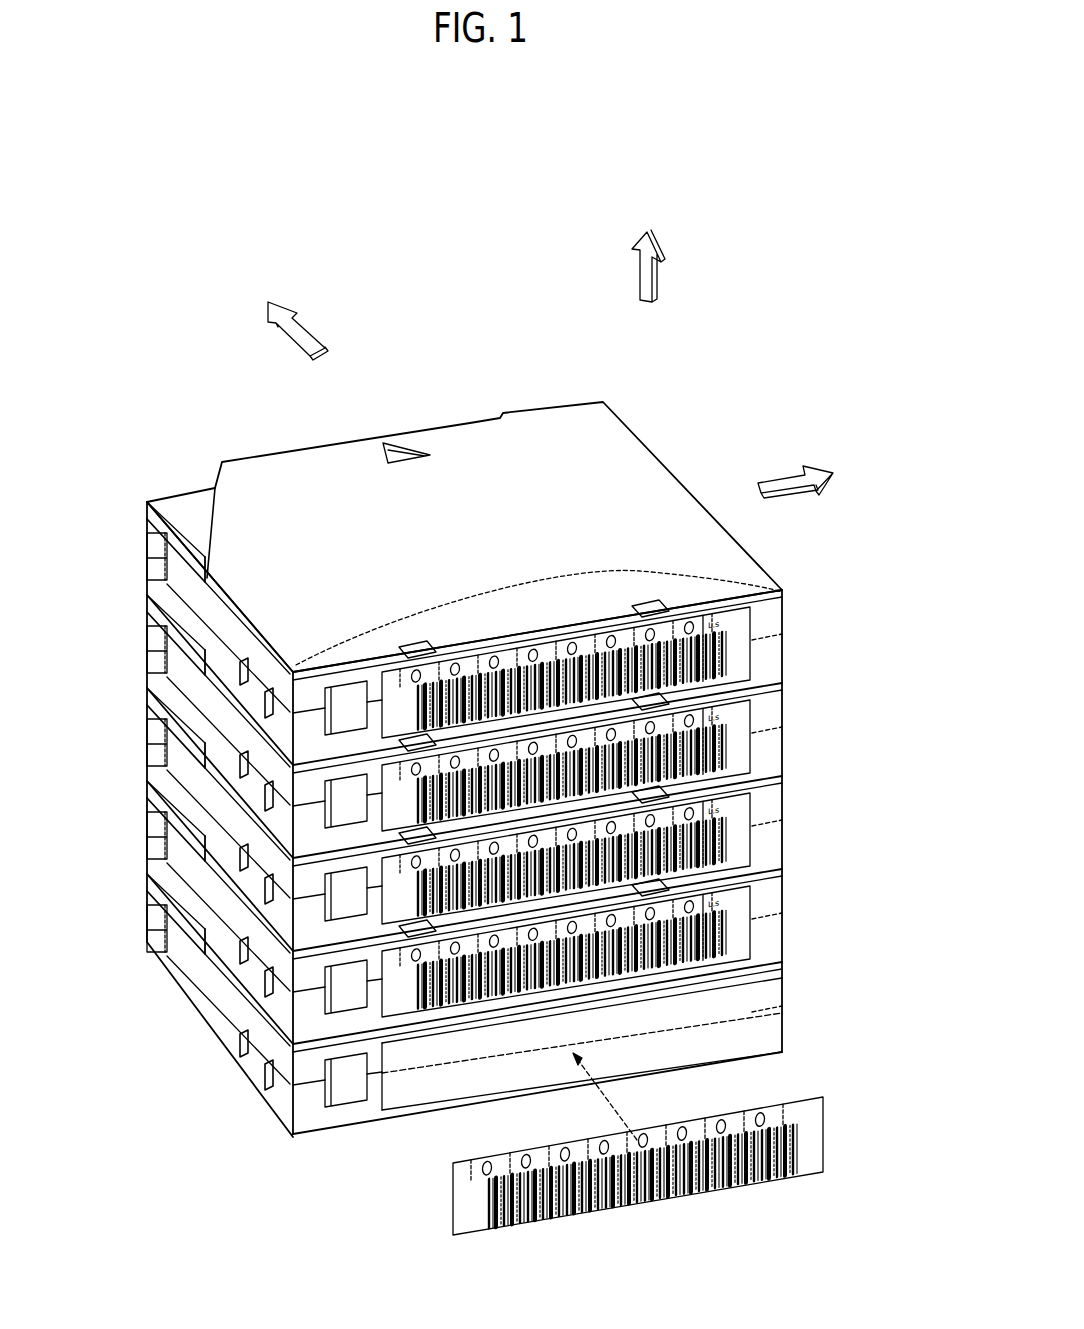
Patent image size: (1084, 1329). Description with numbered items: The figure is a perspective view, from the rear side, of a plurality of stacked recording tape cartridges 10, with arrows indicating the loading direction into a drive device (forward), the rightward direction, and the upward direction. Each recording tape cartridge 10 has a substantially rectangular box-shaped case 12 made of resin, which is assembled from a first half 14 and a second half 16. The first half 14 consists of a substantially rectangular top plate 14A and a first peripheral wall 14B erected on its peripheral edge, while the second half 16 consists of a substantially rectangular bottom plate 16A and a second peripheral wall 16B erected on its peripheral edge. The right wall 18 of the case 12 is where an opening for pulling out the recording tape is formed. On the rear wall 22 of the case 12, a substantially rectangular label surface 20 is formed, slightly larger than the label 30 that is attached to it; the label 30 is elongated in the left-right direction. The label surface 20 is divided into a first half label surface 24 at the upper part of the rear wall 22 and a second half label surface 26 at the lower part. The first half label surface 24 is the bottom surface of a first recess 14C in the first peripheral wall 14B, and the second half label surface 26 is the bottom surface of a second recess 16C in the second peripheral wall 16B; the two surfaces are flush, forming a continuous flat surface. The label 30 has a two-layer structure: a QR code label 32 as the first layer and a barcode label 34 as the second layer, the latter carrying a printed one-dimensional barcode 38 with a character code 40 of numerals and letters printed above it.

The recording tape cartridge 10 is at (683, 444).
The case 12 is at (326, 484).
The first half 14 is at (236, 456).
The top plate 14A is at (558, 448).
The first peripheral wall 14B is at (147, 500).
The first recess 14C is at (392, 1112).
The second half 16 is at (208, 1033).
The bottom plate 16A is at (230, 1055).
The second peripheral wall 16B is at (200, 990).
The second recess 16C is at (384, 1098).
The right wall 18 is at (783, 634).
The label surface 20 is at (878, 935).
The rear wall 22 is at (318, 1133).
The first half label surface 24 is at (736, 998).
The second half label surface 26 is at (740, 1045).
The label 30 is at (740, 623).
The QR code label 32 is at (384, 742).
The barcode label 34 is at (392, 738).
The barcode 38 is at (728, 1132).
The character code 40 is at (624, 1144).